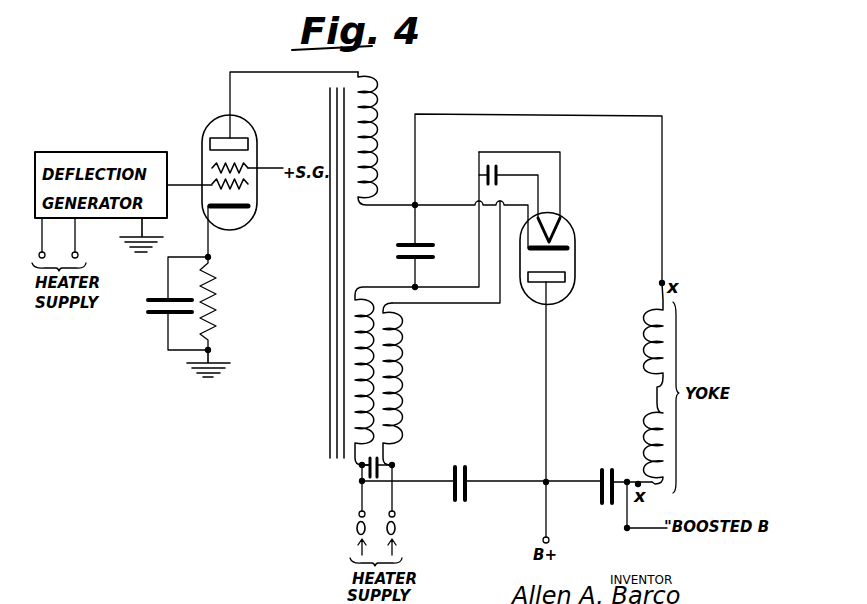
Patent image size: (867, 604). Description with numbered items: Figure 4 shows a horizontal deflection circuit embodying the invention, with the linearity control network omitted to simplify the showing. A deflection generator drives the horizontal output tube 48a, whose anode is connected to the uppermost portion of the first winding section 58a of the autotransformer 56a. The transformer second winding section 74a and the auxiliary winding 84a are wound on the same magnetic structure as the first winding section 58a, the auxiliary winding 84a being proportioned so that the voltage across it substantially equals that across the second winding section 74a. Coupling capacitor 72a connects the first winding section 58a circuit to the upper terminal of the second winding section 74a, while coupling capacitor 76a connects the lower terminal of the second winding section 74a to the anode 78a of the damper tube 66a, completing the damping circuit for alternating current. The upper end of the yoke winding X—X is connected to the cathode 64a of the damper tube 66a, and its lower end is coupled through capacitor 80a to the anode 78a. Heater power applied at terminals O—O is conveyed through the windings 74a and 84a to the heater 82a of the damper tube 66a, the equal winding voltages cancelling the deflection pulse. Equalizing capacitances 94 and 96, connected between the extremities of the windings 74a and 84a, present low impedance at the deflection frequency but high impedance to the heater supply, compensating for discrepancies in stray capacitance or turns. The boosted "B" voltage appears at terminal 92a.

The horizontal output tube 48a is at (251, 128).
The autotransformer 56a is at (366, 77).
The first winding section 58a is at (366, 120).
The cathode 64a is at (570, 242).
The damper tube 66a is at (575, 268).
The coupling capacitor 72a is at (397, 247).
The second winding section 74a is at (355, 372).
The coupling capacitor 76a is at (470, 470).
The anode 78a is at (570, 284).
The capacitor 80a is at (610, 469).
The heater 82a is at (572, 367).
The auxiliary winding 84a is at (403, 375).
The terminal 92a is at (623, 529).
The equalizing capacitance 94 is at (503, 175).
The equalizing capacitance 96 is at (360, 481).